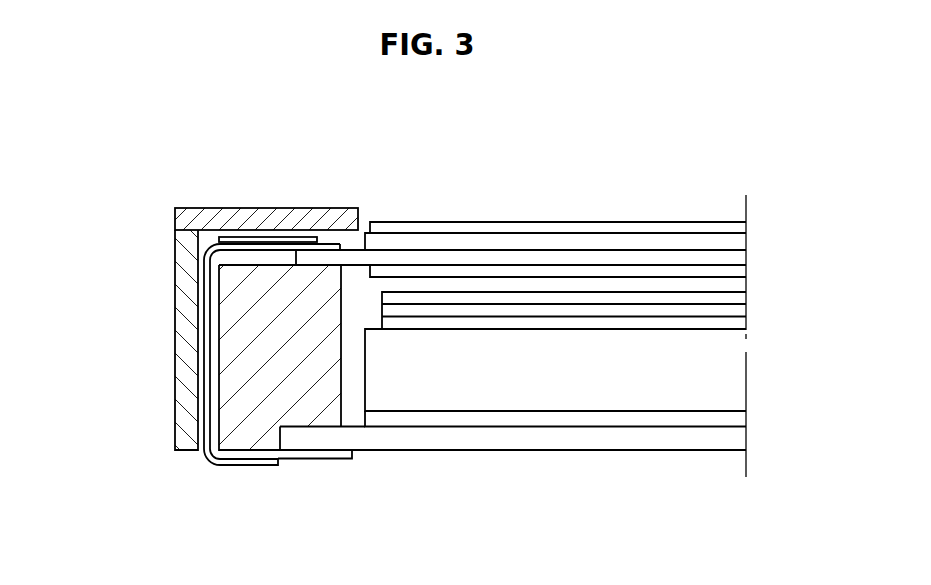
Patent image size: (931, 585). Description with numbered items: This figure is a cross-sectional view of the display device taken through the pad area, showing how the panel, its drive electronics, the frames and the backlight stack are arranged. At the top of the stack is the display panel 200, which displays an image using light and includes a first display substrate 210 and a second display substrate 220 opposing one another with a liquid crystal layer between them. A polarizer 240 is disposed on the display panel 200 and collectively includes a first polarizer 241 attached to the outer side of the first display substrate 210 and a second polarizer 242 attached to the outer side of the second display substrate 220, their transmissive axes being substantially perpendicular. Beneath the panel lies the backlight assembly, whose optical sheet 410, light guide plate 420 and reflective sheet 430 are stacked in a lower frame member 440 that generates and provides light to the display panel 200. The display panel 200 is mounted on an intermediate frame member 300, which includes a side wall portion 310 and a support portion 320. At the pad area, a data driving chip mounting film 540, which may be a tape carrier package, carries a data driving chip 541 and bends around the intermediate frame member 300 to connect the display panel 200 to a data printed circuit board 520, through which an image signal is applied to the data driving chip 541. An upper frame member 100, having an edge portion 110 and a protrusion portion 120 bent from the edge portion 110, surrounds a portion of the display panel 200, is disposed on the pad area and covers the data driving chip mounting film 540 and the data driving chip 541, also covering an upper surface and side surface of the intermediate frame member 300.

The upper frame member 100 is at (90, 192).
The edge portion 110 is at (183, 305).
The protrusion portion 120 is at (261, 209).
The display panel 200 is at (472, 165).
The first display substrate 210 is at (535, 260).
The second display substrate 220 is at (468, 242).
The polarizer 240 is at (683, 165).
The first polarizer 241 is at (682, 272).
The second polarizer 242 is at (615, 228).
The intermediate frame member 300 is at (237, 514).
The side wall portion 310 is at (242, 383).
The support portion 320 is at (295, 353).
The optical sheet 410 is at (755, 288).
The light guide plate 420 is at (722, 372).
The reflective sheet 430 is at (722, 420).
The lower frame member 440 is at (722, 444).
The data printed circuit board 520 is at (335, 455).
The data driving chip mounting film 540 is at (327, 248).
The data driving chip 541 is at (279, 240).